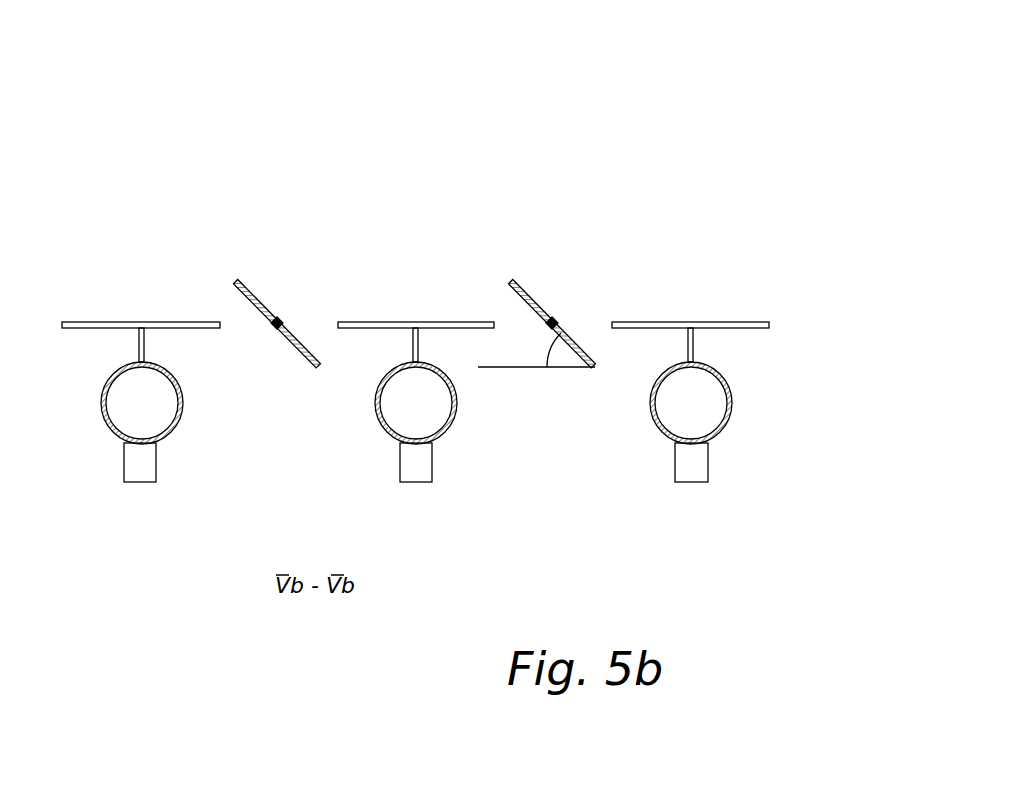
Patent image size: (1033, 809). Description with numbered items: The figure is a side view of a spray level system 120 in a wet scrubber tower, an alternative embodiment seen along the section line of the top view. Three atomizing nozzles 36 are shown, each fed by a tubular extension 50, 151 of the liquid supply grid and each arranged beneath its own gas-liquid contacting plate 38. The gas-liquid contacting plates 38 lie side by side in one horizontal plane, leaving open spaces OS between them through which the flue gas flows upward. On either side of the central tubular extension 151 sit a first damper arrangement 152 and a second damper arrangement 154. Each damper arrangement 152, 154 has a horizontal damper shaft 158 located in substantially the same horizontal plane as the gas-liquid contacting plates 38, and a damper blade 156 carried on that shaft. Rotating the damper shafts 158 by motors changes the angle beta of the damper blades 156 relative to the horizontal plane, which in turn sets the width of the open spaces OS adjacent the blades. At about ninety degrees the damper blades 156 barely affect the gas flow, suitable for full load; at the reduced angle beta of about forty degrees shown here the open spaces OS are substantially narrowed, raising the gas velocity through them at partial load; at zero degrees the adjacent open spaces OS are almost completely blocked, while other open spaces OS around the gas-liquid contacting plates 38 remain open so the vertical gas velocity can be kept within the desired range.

The spray level system 120 is at (602, 112).
The gas-liquid contacting plate 38 is at (95, 322).
The open spaces OS is at (242, 323).
The tubular extension 50 is at (100, 407).
The atomizing nozzle 36 is at (124, 464).
The central tubular extension 151 is at (432, 322).
The first damper arrangement 152 is at (249, 279).
The second damper arrangement 154 is at (526, 288).
The damper blade 156 is at (297, 352).
The damper shaft 158 is at (278, 317).
The angle of damper blade beta is at (548, 358).